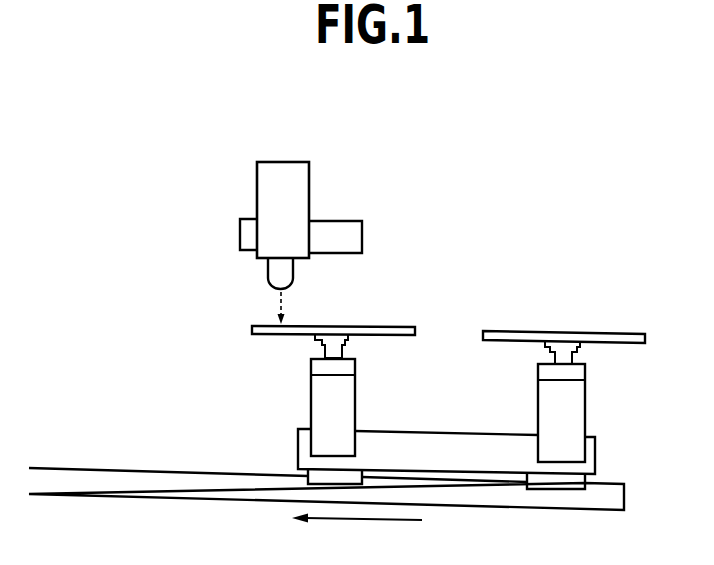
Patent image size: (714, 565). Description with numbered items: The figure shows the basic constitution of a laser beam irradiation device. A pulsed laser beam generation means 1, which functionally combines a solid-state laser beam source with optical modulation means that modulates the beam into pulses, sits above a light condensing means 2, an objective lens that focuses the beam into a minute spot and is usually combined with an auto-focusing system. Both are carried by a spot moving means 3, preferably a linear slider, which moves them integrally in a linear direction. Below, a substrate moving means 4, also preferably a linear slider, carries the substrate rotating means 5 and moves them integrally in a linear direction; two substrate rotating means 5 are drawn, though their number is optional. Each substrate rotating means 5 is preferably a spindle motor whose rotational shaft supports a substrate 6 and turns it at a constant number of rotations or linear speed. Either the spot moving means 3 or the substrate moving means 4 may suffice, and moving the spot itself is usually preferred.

The pulsed laser beam generation means 1 is at (282, 162).
The light condensing means 2 is at (268, 271).
The spot moving means 3 is at (348, 221).
The substrate moving means 4 is at (181, 471).
The substrate rotating means 5 is at (357, 391).
The substrate 6 is at (397, 326).